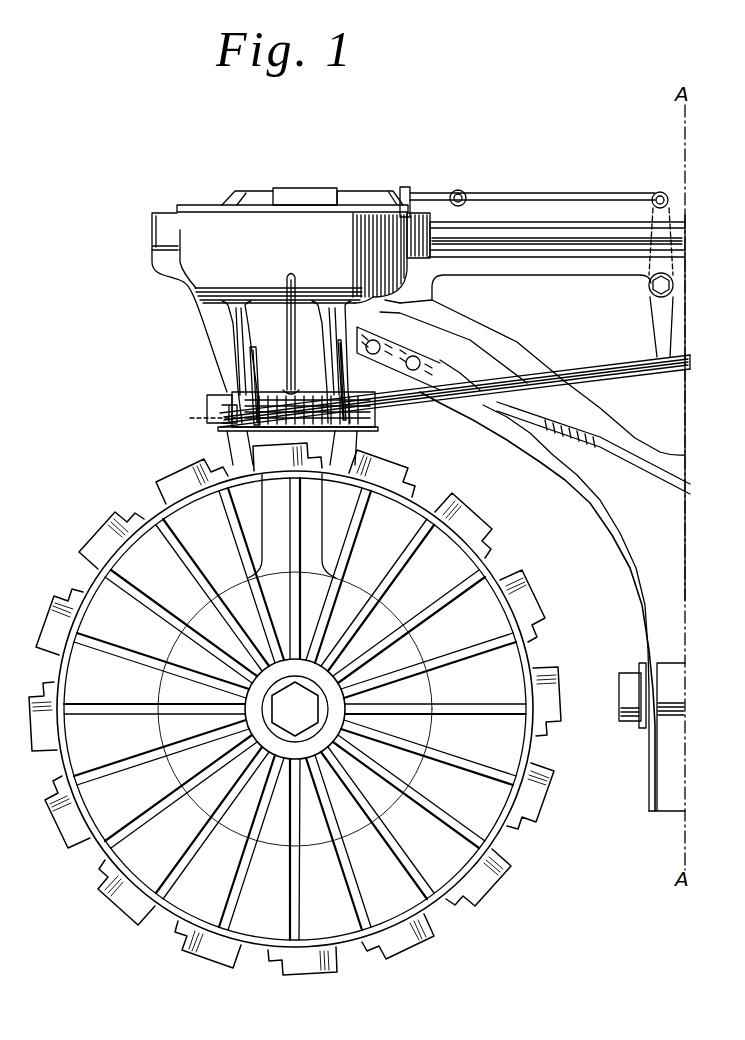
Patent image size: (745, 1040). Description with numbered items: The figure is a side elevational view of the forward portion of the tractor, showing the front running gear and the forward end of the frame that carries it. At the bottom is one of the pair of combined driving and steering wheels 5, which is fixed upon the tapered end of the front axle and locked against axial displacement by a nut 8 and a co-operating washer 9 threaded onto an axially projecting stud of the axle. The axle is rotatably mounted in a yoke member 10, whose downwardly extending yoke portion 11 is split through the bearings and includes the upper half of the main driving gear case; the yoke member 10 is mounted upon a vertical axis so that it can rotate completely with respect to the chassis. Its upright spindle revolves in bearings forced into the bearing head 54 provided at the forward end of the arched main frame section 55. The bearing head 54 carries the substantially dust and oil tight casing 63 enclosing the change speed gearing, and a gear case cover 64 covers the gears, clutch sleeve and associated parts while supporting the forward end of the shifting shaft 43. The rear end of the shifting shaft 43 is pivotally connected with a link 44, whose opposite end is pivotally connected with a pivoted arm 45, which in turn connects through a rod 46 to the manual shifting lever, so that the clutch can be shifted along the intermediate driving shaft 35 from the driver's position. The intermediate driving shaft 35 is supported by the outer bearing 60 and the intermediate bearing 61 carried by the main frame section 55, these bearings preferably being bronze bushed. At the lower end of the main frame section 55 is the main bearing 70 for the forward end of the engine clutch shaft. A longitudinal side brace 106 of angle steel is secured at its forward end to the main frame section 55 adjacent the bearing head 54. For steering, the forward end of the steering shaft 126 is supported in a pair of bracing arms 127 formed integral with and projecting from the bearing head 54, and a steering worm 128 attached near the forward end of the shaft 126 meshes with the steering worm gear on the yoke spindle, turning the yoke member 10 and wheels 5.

The combined driving and steering wheel 5 is at (510, 670).
The nut 8 is at (333, 702).
The washer 9 is at (265, 712).
The yoke member 10 is at (243, 453).
The yoke portion 11 is at (403, 771).
The intermediate driving shaft 35 is at (580, 234).
The shifting shaft 43 is at (418, 198).
The link 44 is at (577, 186).
The pivoted arm 45 is at (658, 317).
The rod 46 is at (690, 364).
The bearing head 54 is at (227, 330).
The arched main frame section 55 is at (627, 517).
The outer bearing 60 is at (164, 233).
The intermediate bearing 61 is at (434, 255).
The casing 63 is at (193, 263).
The gear case cover 64 is at (326, 172).
The main bearing 70 is at (665, 702).
The longitudinal side brace 106 is at (578, 443).
The steering shaft 126 is at (467, 399).
The bracing arm 127 is at (248, 372).
The steering worm 128 is at (269, 411).